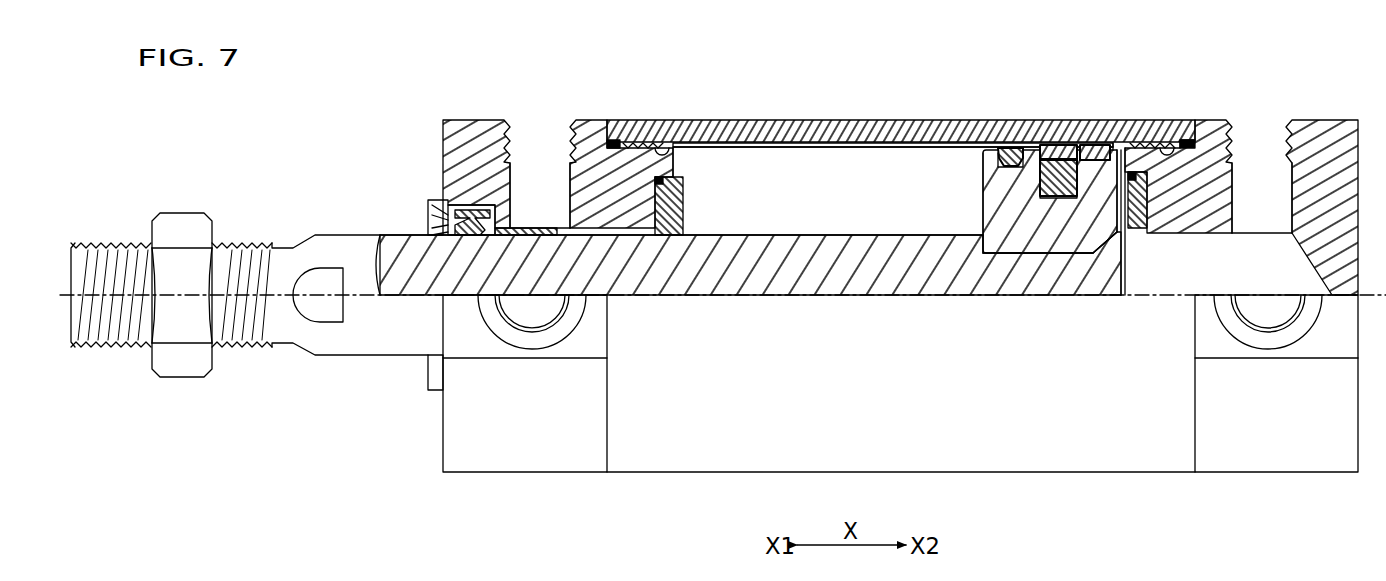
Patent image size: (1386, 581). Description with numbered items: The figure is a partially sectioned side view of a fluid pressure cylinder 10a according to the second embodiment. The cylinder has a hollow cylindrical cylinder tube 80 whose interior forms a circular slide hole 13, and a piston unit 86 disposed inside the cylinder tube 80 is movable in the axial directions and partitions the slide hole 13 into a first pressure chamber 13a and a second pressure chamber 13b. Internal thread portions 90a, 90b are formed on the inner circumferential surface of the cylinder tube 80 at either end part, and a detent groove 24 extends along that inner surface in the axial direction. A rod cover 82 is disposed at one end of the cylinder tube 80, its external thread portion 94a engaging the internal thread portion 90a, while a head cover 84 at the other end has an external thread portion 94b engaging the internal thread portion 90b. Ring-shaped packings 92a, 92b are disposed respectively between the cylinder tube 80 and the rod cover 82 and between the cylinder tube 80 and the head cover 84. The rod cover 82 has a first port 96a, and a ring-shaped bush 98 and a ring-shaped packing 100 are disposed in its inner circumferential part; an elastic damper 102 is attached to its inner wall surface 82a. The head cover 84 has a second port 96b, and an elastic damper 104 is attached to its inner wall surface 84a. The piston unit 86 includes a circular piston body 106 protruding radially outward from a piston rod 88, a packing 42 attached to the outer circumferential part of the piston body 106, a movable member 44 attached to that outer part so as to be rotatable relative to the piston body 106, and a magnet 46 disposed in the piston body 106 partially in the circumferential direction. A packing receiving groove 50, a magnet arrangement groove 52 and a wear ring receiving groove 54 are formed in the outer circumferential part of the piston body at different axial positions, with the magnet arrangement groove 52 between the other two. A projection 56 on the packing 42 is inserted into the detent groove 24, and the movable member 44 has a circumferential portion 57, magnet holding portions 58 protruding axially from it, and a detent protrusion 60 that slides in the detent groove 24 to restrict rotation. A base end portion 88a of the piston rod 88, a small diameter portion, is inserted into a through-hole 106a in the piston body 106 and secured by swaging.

The fluid pressure cylinder 10a is at (275, 116).
The slide hole 13 is at (849, 143).
The first pressure chamber 13a is at (770, 143).
The second pressure chamber 13b is at (1123, 158).
The detent groove 24 is at (783, 149).
The packing 42 is at (984, 156).
The movable member 44 is at (1048, 140).
The magnet 46 is at (1072, 167).
The packing receiving groove 50 is at (1008, 150).
The magnet arrangement groove 52 is at (1052, 175).
The wear ring receiving groove 54 is at (1104, 152).
The projection 56 is at (1005, 147).
The circumferential portion 57 is at (1091, 153).
The magnet holding portion 58 is at (1056, 152).
The detent protrusion 60 is at (1086, 145).
The cylinder tube 80 is at (812, 118).
The rod cover 82 is at (446, 117).
The inner wall surface of rod cover 82a is at (676, 160).
The head cover 84 is at (1329, 118).
The inner wall surface of head cover 84a is at (1117, 197).
The piston unit 86 is at (979, 186).
The piston rod 88 is at (242, 240).
The base end portion of piston rod 88a is at (1108, 273).
The internal thread portion 90a is at (668, 143).
The internal thread portion 90b is at (1165, 150).
The packing 92a is at (612, 140).
The packing 92b is at (1190, 133).
The external thread portion 94a is at (634, 140).
The external thread portion 94b is at (1148, 150).
The first port 96a is at (536, 140).
The second port 96b is at (1252, 140).
The bush 98 is at (534, 229).
The packing 100 is at (430, 214).
The damper 102 is at (684, 212).
The damper 104 is at (1131, 222).
The piston body 106 is at (1058, 254).
The through-hole 106a is at (997, 254).